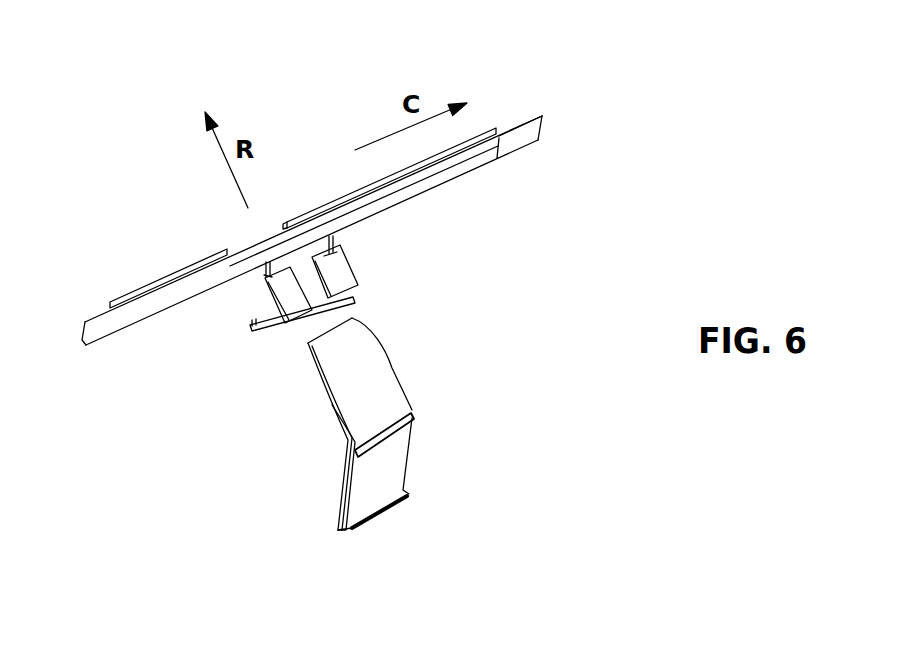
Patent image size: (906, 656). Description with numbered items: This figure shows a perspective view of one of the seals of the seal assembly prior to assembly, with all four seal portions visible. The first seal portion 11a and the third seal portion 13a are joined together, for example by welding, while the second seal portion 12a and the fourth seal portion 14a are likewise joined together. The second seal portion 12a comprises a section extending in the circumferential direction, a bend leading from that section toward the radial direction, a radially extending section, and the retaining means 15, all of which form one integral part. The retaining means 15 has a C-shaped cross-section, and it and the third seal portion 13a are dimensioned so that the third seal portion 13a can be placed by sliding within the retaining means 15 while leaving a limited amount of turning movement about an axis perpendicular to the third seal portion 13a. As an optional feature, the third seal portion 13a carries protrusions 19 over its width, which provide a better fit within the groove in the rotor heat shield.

The first seal portion 11a is at (337, 473).
The second seal portion 12a is at (523, 136).
The third seal portion 13a is at (358, 371).
The fourth seal portion 14a is at (103, 328).
The retaining means 15 is at (338, 273).
The protrusions 19 is at (395, 448).